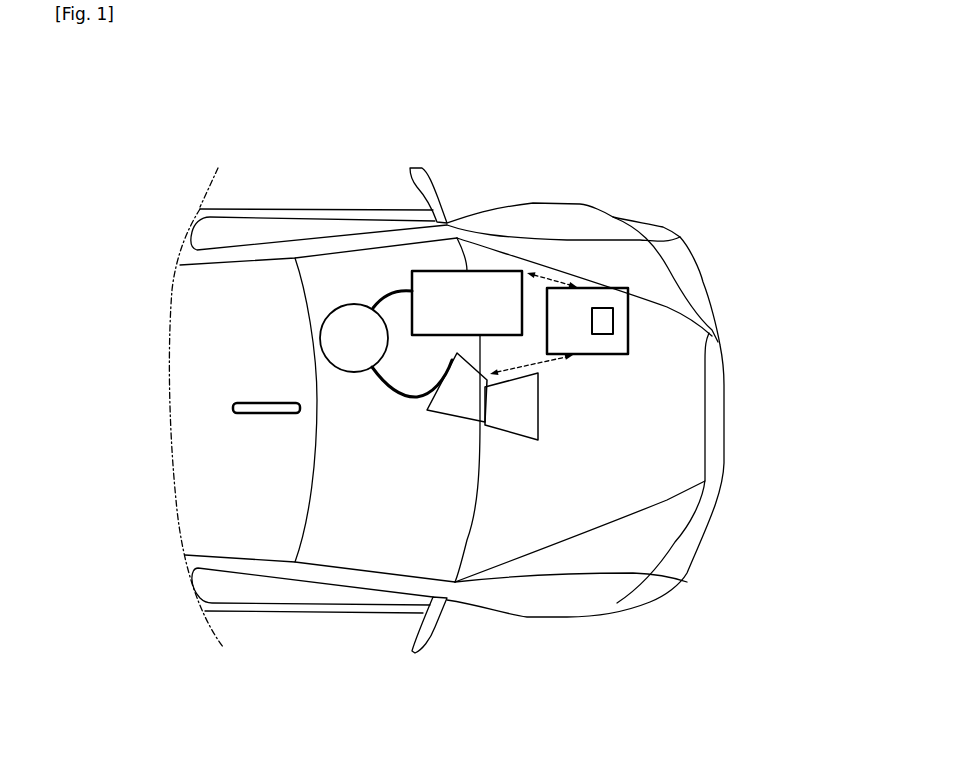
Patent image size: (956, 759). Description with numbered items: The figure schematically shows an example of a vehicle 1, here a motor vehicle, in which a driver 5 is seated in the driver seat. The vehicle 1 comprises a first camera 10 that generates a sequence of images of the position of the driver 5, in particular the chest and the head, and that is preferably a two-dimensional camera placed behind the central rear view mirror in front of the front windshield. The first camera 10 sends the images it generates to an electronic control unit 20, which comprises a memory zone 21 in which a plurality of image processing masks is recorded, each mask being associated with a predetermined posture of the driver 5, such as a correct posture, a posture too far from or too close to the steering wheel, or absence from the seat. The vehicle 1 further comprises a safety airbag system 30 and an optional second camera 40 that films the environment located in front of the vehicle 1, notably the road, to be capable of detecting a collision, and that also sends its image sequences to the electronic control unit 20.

The vehicle 1 is at (593, 166).
The driver 5 is at (346, 327).
The first camera 10 is at (463, 392).
The electronic control unit 20 is at (600, 297).
The memory zone 21 is at (603, 323).
The safety airbag system 30 is at (490, 293).
The second camera 40 is at (512, 408).